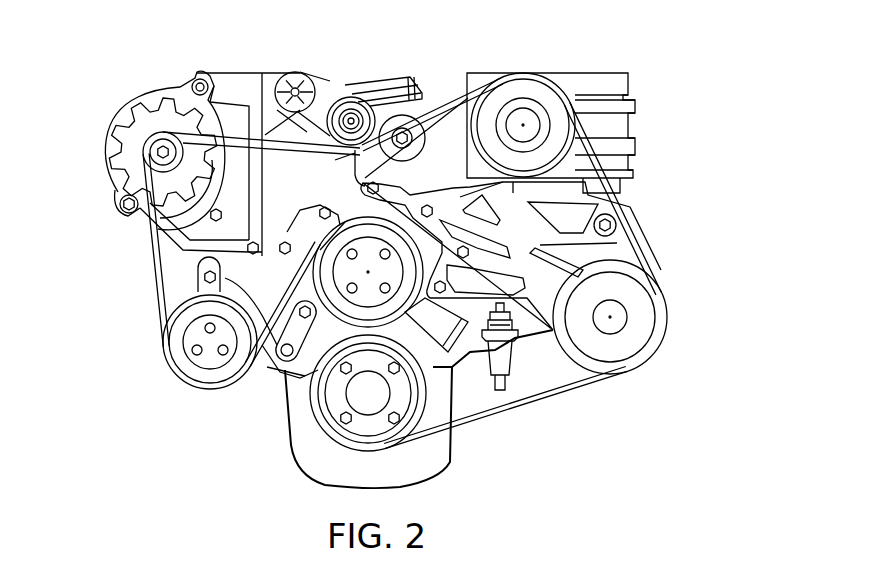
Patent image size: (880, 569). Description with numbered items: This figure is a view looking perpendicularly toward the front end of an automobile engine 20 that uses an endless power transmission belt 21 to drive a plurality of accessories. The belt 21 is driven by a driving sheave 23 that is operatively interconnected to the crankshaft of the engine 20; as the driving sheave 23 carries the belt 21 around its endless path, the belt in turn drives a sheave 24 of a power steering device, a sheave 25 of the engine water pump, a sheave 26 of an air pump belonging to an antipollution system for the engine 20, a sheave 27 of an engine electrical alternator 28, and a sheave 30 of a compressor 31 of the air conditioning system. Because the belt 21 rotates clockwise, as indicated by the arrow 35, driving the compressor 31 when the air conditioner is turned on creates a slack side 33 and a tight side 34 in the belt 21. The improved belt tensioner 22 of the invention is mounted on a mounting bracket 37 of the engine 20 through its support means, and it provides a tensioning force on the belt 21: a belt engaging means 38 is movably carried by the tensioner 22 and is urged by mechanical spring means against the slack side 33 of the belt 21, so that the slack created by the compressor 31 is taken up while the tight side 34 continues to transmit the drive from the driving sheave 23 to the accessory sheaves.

The automobile engine 20 is at (680, 118).
The endless power transmission belt 21 is at (630, 207).
The belt tensioner 22 is at (312, 70).
The driving sheave 23 is at (318, 430).
The sheave of power steering device 24 is at (663, 332).
The sheave of engine water pump 25 is at (360, 217).
The sheave of air pump 26 is at (165, 370).
The sheave of engine electrical alternator 27 is at (141, 153).
The engine electrical alternator 28 is at (128, 102).
The sheave of compressor 30 is at (530, 73).
The compressor 31 is at (620, 83).
The slack side 33 is at (455, 100).
The tight side 34 is at (630, 172).
The arrow 35 is at (515, 435).
The mounting bracket 37 is at (251, 83).
The belt engaging means 38 is at (362, 90).